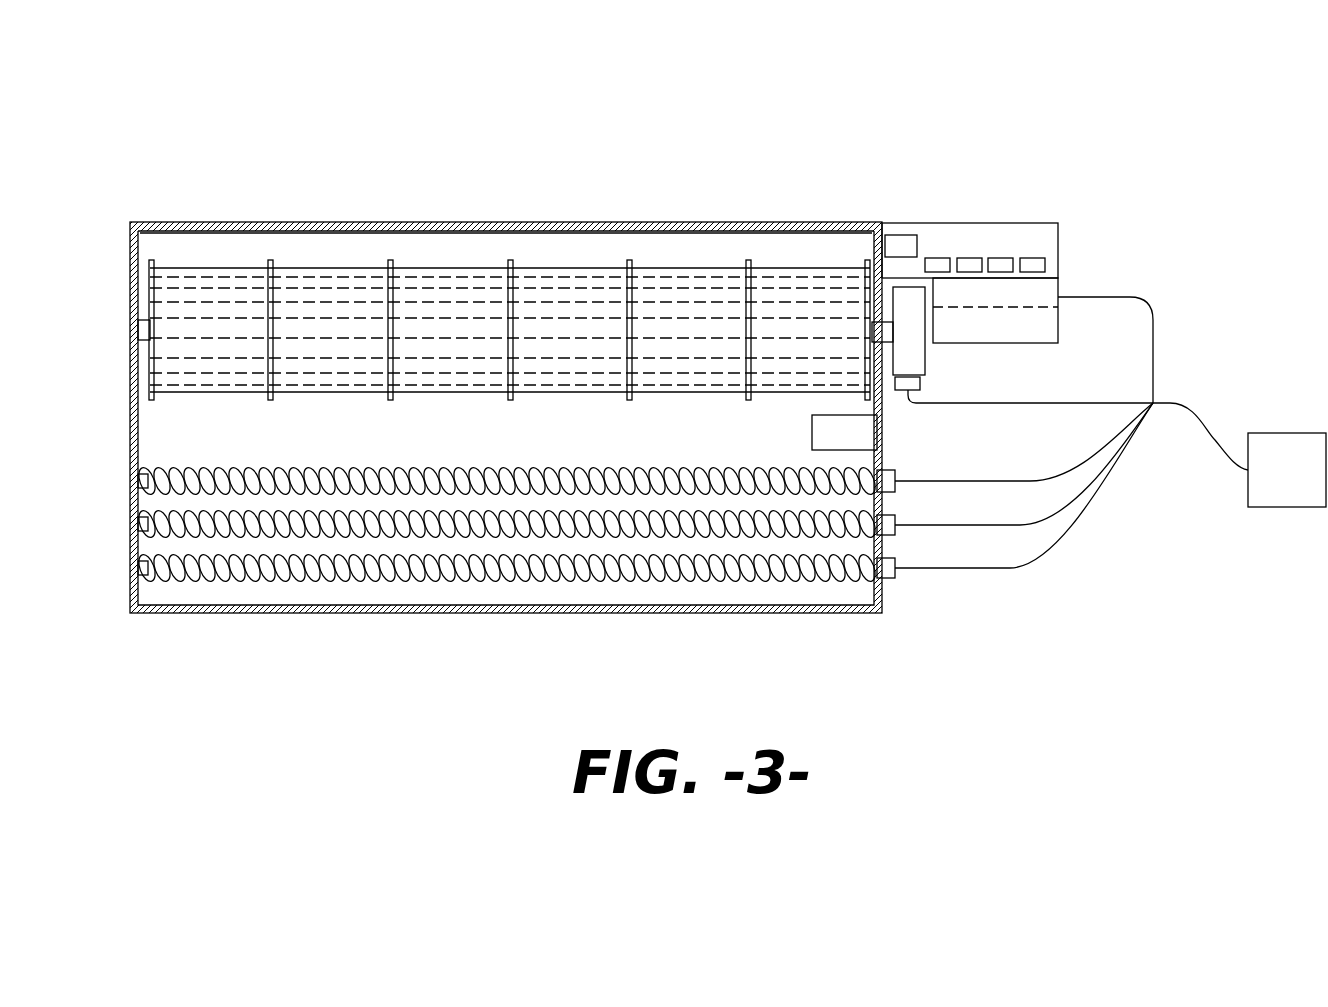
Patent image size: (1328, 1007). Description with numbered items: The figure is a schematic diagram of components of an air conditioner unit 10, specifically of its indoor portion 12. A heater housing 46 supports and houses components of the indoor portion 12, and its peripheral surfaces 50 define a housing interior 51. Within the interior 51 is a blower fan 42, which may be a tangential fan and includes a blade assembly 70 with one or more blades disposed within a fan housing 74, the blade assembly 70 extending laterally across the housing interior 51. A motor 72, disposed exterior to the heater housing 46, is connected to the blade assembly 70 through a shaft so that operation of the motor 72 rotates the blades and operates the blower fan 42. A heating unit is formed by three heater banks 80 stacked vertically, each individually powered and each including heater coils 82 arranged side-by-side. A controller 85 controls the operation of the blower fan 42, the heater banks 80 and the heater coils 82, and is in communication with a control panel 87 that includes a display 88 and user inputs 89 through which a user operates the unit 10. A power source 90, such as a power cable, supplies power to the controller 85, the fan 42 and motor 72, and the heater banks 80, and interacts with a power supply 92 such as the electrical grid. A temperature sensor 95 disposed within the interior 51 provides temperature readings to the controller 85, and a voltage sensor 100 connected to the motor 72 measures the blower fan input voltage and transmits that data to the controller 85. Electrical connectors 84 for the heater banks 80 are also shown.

The air conditioner unit 10 is at (150, 151).
The indoor portion 12 is at (121, 591).
The blower fan 42 is at (785, 259).
The heater housing 46 is at (296, 223).
The peripheral surfaces 50 is at (420, 222).
The housing interior 51 is at (524, 446).
The blade assembly 70 is at (672, 296).
The motor 72 is at (906, 307).
The fan housing 74 is at (558, 302).
The heater bank 80 is at (507, 577).
The heater coil 82 is at (393, 472).
The electrical connectors 84 is at (895, 535).
The controller 85 is at (1060, 290).
The control panel 87 is at (980, 245).
The display 88 is at (901, 243).
The user inputs 89 is at (1030, 265).
The power source 90 is at (1204, 422).
The power supply 92 is at (1313, 478).
The temperature sensor 95 is at (812, 423).
The voltage sensor 100 is at (921, 385).